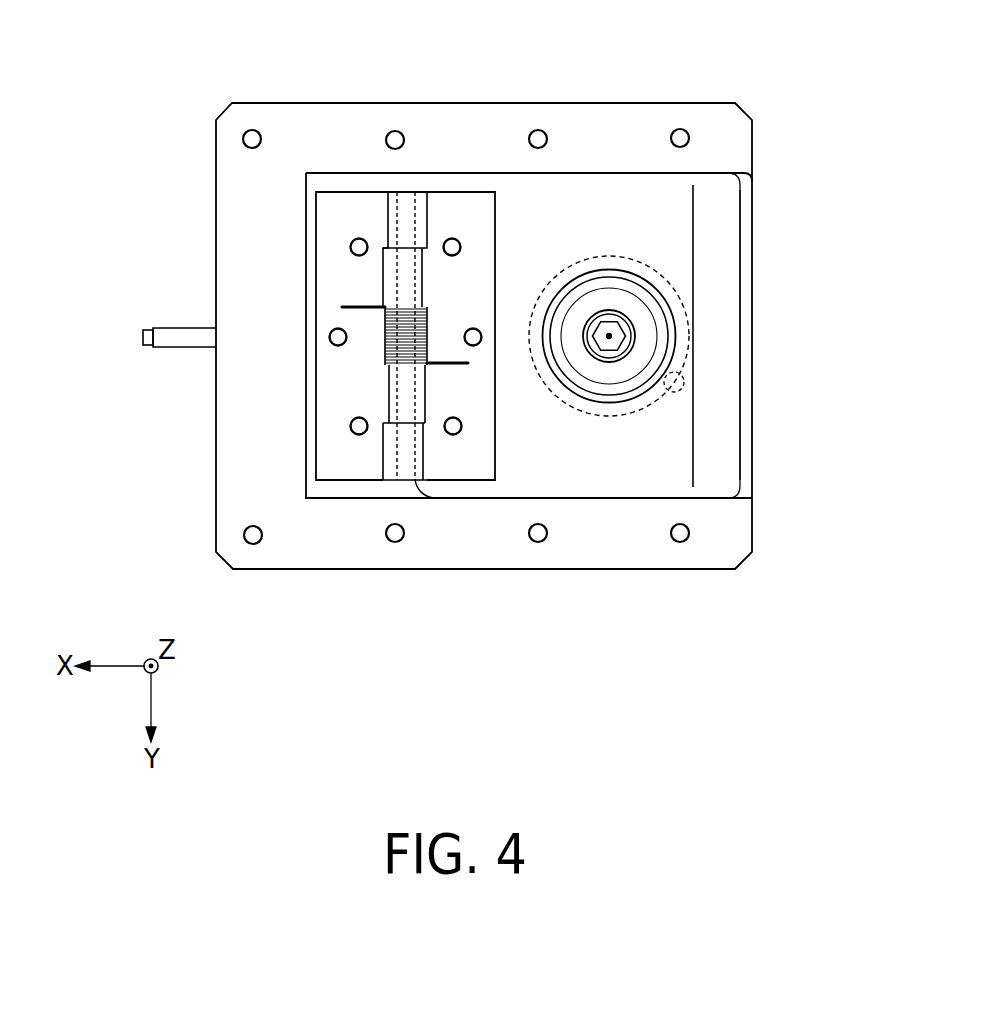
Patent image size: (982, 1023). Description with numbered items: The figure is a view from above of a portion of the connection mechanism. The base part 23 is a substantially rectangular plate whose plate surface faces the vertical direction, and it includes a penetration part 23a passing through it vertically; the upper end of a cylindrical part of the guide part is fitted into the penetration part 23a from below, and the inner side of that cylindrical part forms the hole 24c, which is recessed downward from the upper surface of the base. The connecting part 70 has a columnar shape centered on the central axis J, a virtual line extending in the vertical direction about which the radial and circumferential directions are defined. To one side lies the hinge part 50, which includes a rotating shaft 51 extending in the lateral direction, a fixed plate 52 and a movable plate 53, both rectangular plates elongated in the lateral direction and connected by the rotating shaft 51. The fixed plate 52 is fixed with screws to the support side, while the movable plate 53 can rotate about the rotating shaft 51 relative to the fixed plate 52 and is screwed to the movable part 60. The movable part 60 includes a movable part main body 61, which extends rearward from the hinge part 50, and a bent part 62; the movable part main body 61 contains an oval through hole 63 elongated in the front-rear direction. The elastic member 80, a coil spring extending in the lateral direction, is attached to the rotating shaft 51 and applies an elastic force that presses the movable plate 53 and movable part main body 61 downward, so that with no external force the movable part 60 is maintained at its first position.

The base part 23 is at (308, 103).
The penetration part 23a is at (667, 392).
The hole 24c is at (643, 377).
The hinge part 50 is at (339, 338).
The rotating shaft 51 is at (407, 478).
The fixed plate 52 is at (350, 205).
The movable plate 53 is at (487, 213).
The movable part 60 is at (755, 205).
The movable part main body 61 is at (586, 185).
The bent part 62 is at (730, 236).
The through hole 63 is at (567, 377).
The connecting part 70 is at (611, 300).
The elastic member 80 is at (385, 355).
The central axis J is at (611, 335).